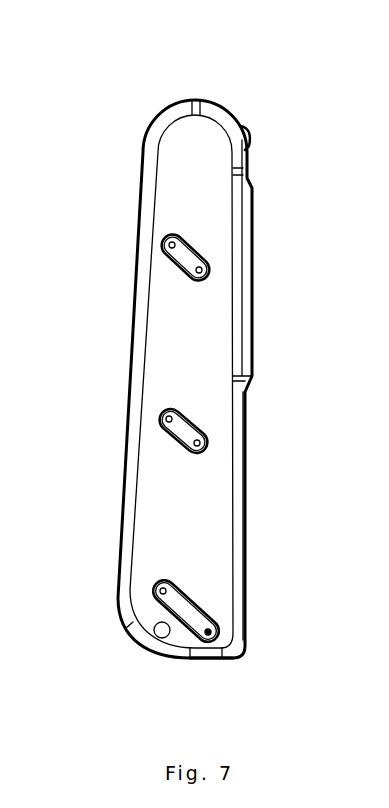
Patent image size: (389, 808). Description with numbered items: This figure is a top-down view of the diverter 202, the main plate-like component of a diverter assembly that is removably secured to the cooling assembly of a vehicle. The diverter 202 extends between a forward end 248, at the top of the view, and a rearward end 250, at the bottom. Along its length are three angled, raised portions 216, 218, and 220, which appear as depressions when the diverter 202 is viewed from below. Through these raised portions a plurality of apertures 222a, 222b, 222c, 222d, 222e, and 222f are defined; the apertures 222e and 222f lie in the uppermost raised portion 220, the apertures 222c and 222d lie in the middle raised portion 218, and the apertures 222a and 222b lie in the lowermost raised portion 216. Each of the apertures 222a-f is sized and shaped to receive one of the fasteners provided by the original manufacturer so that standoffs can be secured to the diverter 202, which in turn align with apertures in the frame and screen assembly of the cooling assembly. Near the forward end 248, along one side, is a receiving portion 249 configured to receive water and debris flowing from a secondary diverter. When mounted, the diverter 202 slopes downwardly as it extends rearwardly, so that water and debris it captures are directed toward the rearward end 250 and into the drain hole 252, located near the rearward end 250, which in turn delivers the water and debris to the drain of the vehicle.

The diverter 202 is at (146, 131).
The angled raised portion 216 is at (185, 580).
The angled raised portion 218 is at (177, 420).
The angled raised portion 220 is at (179, 249).
The aperture 222a is at (160, 591).
The aperture 222b is at (211, 632).
The aperture 222c is at (166, 419).
The aperture 222d is at (194, 443).
The aperture 222e is at (169, 245).
The aperture 222f is at (196, 271).
The forward end 248 is at (188, 97).
The receiving portion 249 is at (250, 130).
The rearward end 250 is at (212, 662).
The drain hole 252 is at (155, 633).